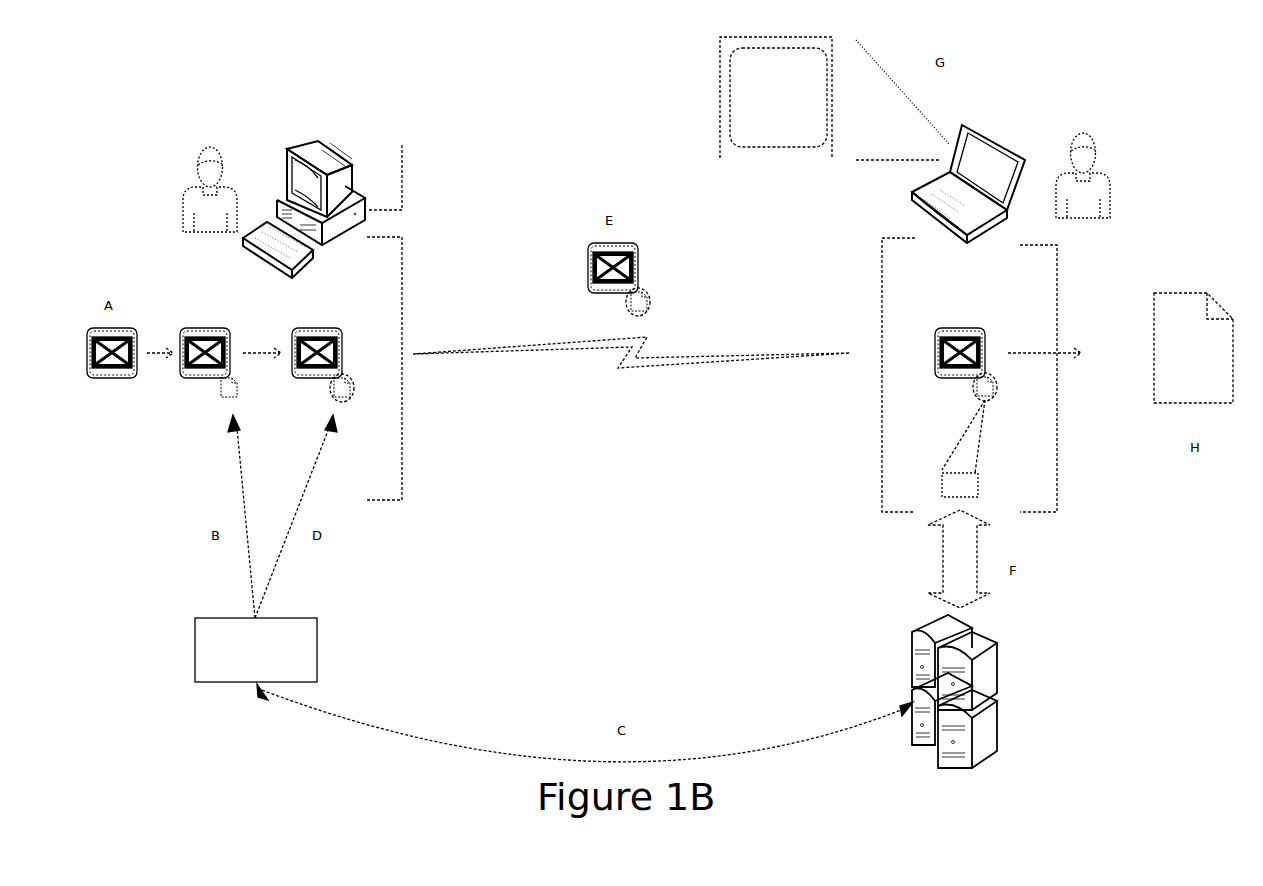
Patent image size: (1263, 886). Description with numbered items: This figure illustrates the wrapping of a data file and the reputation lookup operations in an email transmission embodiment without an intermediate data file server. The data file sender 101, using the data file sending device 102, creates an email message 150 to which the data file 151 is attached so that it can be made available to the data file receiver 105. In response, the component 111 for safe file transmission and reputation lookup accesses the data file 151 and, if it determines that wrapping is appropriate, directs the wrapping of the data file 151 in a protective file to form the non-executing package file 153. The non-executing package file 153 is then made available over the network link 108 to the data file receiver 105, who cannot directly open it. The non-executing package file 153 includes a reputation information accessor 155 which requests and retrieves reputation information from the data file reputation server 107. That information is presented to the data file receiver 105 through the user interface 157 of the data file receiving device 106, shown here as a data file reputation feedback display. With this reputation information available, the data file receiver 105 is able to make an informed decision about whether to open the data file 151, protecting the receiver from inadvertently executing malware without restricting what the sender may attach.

The data file sender 101 is at (210, 176).
The data file sending device 102 is at (322, 153).
The data file receiver 105 is at (1092, 172).
The data file receiving device 106 is at (1002, 157).
The data file reputation server 107 is at (997, 660).
The network link 108 is at (632, 368).
The component for safe file transmission and reputation lookup 111 is at (318, 651).
The email message 150 is at (111, 378).
The data file 151 is at (237, 390).
The non-executing package file 153 is at (352, 372).
The reputation information accessor 155 is at (963, 448).
The user interface 157 is at (776, 97).